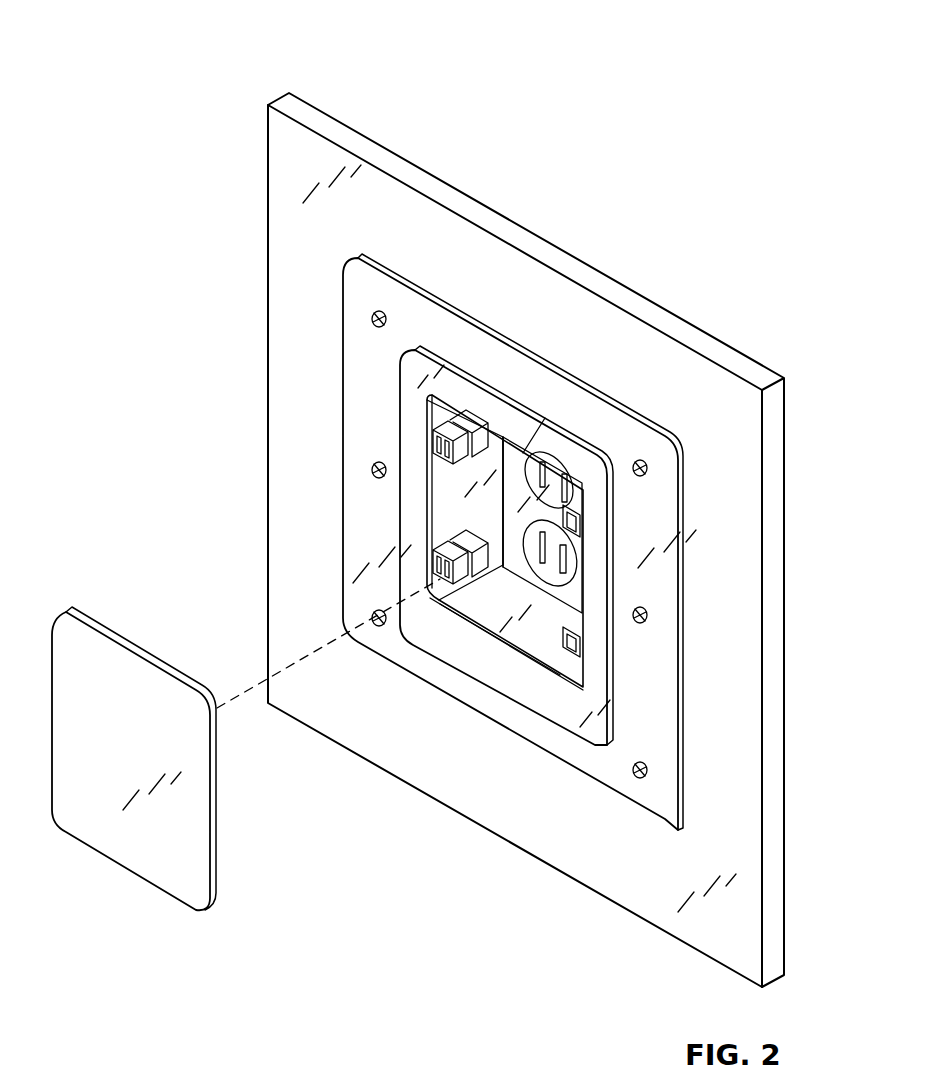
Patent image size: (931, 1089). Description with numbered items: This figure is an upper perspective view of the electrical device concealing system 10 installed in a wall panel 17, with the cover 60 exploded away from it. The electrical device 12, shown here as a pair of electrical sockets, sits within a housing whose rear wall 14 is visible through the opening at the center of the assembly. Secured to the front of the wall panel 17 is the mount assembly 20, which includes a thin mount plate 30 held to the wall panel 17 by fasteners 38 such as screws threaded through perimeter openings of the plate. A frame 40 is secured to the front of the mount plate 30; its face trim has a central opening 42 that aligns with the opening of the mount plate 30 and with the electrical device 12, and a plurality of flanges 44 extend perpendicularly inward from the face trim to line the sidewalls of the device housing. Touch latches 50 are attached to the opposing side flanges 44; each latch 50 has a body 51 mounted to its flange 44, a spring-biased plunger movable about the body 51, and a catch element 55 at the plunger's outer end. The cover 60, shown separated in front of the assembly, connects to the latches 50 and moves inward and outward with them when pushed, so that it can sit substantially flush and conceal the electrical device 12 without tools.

The electrical device concealing system 10 is at (636, 133).
The electrical device 12 is at (545, 555).
The rear wall 14 is at (497, 440).
The wall panel 17 is at (295, 162).
The mount assembly 20 is at (336, 396).
The mount plate 30 is at (360, 355).
The fasteners 38 is at (370, 470).
The frame 40 is at (541, 716).
The opening 42 is at (475, 640).
The flanges 44 is at (443, 505).
The touch latches 50 is at (433, 441).
The body 51 is at (516, 457).
The catch element 55 is at (577, 635).
The cover 60 is at (178, 875).